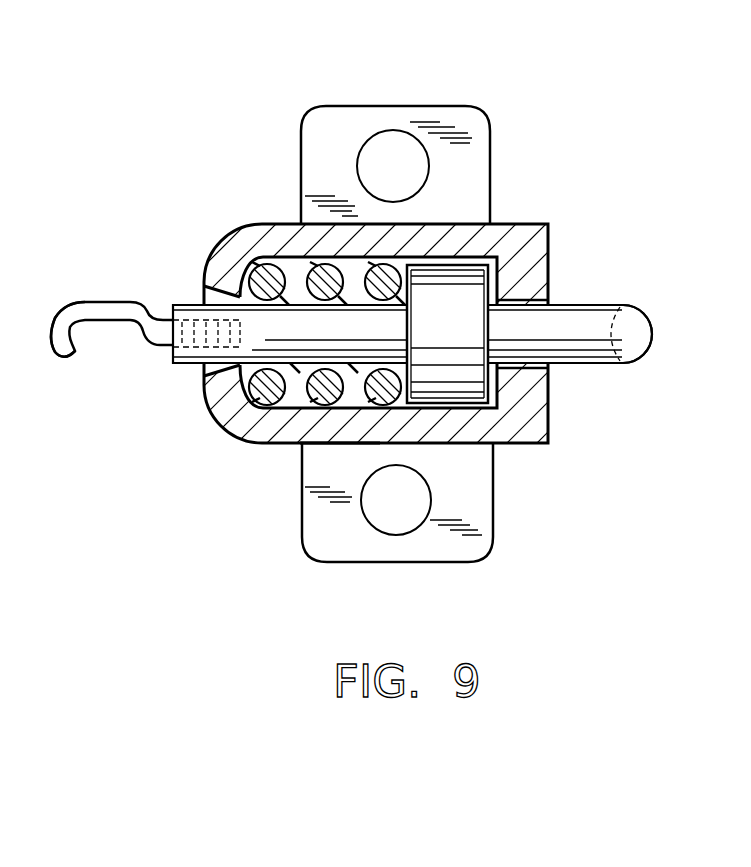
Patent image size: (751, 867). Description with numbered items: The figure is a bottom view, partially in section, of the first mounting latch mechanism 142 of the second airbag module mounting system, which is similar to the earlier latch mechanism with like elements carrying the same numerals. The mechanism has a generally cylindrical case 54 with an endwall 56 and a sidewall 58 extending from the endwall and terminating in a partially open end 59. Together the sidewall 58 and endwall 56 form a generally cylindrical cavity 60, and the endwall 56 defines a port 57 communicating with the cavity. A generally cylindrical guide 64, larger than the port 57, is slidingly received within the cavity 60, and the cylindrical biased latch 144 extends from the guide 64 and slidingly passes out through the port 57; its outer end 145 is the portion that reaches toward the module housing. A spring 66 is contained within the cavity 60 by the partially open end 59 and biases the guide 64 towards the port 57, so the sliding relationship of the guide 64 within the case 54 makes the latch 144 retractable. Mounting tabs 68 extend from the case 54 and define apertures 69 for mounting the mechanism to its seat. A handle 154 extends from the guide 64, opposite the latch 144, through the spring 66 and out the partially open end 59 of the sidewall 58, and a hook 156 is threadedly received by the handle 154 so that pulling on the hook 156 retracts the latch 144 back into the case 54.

The case 54 is at (262, 224).
The endwall 56 is at (548, 405).
The port 57 is at (566, 305).
The sidewall 58 is at (433, 443).
The partially open end 59 is at (217, 382).
The cavity 60 is at (340, 443).
The guide 64 is at (452, 400).
The spring 66 is at (222, 405).
The mounting tabs 68 is at (428, 106).
The apertures 69 is at (384, 147).
The first mounting latch mechanism 142 is at (527, 160).
The latch 144 is at (600, 303).
The rounded rod end 145 is at (650, 330).
The handle 154 is at (183, 303).
The hook 156 is at (55, 315).